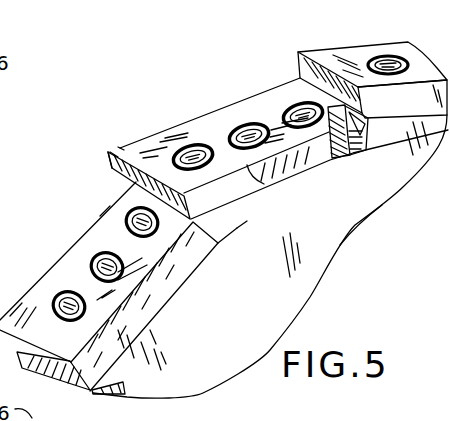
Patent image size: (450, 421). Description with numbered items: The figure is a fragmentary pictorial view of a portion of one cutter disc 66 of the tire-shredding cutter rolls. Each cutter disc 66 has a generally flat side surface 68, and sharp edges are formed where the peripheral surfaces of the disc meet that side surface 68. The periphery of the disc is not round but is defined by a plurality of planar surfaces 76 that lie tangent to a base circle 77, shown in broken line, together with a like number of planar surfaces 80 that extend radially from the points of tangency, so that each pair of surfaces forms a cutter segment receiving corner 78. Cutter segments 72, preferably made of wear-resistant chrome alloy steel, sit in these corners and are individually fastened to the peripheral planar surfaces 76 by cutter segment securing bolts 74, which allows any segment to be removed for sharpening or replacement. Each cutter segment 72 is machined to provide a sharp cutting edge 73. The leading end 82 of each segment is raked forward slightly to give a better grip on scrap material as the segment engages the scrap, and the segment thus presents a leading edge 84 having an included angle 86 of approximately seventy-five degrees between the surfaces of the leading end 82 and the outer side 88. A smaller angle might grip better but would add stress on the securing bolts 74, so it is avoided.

The cutter disc 66 is at (254, 312).
The side surface 68 is at (300, 252).
The cutter segment 72 is at (147, 137).
The cutting edge 73 is at (172, 132).
The cutter segment securing bolt 74 is at (290, 108).
The planar surface 76 is at (338, 162).
The base circle 77 is at (256, 234).
The cutter segment receiving corner 78 is at (367, 130).
The planar surface 80 is at (345, 144).
The leading end 82 is at (112, 178).
The leading edge 84 is at (130, 155).
The included angle 86 is at (380, 91).
The outer side 88 is at (122, 155).